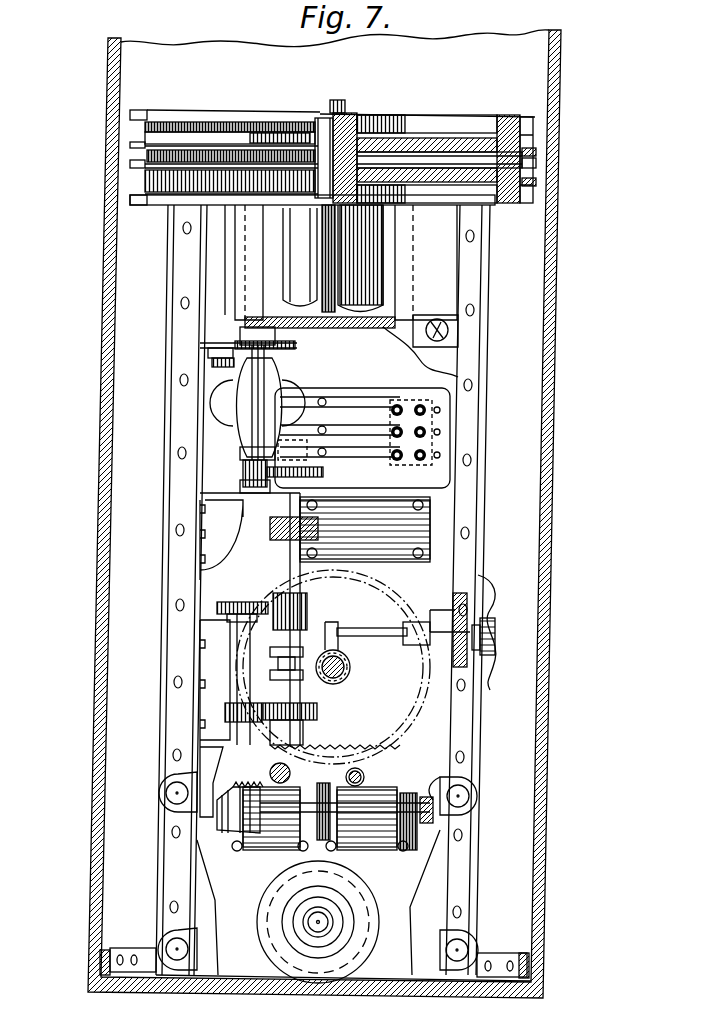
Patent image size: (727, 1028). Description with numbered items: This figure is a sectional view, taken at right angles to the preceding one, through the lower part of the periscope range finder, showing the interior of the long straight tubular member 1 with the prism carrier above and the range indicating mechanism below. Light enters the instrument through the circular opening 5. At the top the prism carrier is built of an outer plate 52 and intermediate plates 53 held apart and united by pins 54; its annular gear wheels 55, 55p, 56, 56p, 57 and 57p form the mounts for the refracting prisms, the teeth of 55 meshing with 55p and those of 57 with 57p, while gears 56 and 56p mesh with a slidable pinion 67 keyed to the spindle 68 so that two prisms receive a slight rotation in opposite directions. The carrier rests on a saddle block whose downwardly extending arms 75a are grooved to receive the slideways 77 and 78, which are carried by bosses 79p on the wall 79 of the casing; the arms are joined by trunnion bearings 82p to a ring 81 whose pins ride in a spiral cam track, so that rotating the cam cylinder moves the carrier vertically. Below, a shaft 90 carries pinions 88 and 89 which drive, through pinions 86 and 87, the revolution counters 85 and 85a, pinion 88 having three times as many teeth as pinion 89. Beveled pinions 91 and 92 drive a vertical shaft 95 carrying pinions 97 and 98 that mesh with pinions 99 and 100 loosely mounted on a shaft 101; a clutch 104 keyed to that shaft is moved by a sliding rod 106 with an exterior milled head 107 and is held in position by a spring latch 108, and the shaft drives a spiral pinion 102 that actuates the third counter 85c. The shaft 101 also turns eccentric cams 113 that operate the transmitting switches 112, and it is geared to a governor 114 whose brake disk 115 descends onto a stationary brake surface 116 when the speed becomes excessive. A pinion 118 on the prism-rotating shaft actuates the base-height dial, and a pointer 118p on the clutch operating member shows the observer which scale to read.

The tubular member 1 is at (553, 462).
The circular opening 5 is at (368, 125).
The outer plate 52 is at (132, 200).
The intermediate plates 53 is at (140, 143).
The pins 54 is at (536, 162).
The annular gear wheel 55 is at (208, 122).
The annular gear wheel 55p is at (505, 120).
The annular gear wheel 56 is at (130, 157).
The annular gear wheel 56p is at (533, 152).
The annular gear wheel 57 is at (152, 102).
The annular gear wheel 57p is at (536, 184).
The slidable pinion 67 is at (316, 124).
The spindle 68 is at (320, 255).
The downwardly extending arms 75a is at (248, 298).
The slideway 77 is at (217, 272).
The slideway 78 is at (440, 272).
The wall 79 is at (225, 346).
The bosses 79p is at (462, 325).
The ring 81 is at (375, 250).
The trunnion bearings 82p is at (265, 233).
The revolution counter 85 is at (366, 848).
The revolution counter 85a is at (262, 868).
The revolution counter 85c is at (410, 518).
The pinion 86 is at (282, 844).
The pinion 87 is at (410, 850).
The pinion 88 is at (320, 780).
The pinion 89 is at (440, 795).
The shaft 90 is at (252, 827).
The beveled pinion 91 is at (233, 818).
The beveled pinion 92 is at (212, 790).
The vertical shaft 95 is at (246, 682).
The pinion 97 is at (230, 708).
The pinion 98 is at (250, 604).
The pinion 99 is at (302, 715).
The pinion 100 is at (302, 605).
The shaft 101 is at (300, 673).
The spiral pinion 102 is at (272, 532).
The clutch 104 is at (320, 648).
The sliding rod 106 is at (404, 630).
The milled head 107 is at (490, 636).
The spring latch 108 is at (414, 622).
The transmitting switches 112 is at (345, 403).
The eccentric cams 113 is at (322, 447).
The governor 114 is at (236, 408).
The brake disk 115 is at (298, 345).
The stationary brake surface 116 is at (240, 367).
The pinion 118 is at (340, 683).
The pointer 118p is at (366, 777).